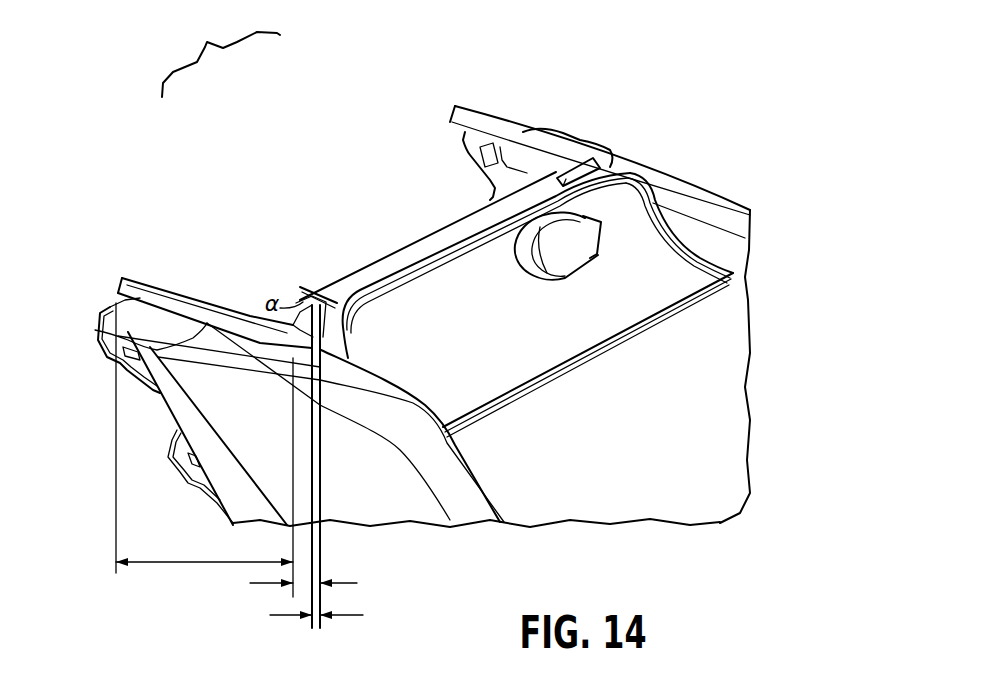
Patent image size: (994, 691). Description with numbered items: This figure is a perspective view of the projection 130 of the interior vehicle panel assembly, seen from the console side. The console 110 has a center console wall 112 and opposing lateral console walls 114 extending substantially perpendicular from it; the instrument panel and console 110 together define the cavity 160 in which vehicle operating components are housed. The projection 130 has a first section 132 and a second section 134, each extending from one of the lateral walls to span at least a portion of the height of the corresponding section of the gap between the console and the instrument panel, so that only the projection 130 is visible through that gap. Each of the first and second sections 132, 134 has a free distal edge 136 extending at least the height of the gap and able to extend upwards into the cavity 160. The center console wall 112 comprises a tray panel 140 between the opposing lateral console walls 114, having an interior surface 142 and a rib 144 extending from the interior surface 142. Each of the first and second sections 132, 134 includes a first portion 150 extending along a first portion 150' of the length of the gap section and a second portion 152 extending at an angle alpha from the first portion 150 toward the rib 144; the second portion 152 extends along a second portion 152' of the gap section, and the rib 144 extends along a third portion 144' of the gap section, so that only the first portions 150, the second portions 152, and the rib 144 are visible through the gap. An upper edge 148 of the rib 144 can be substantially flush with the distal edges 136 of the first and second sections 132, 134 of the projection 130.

The console 110 is at (773, 362).
The center console wall 112 is at (703, 432).
The opposing lateral console walls 114 is at (727, 217).
The projection 130 is at (242, 290).
The first section 132 is at (124, 278).
The second section 134 is at (453, 108).
The free distal edge 136 is at (160, 280).
The tray panel 140 is at (663, 278).
The interior surface 142 is at (327, 327).
The rib 144 is at (428, 240).
The upper edge 148 is at (453, 215).
The first portion 150 is at (320, 216).
The second portion 152 is at (450, 206).
The cavity 160 is at (283, 190).
The first portion of the length of the gap section 150' is at (204, 483).
The second portion of the gap section 152' is at (296, 633).
The third portion of the gap section 144' is at (324, 651).